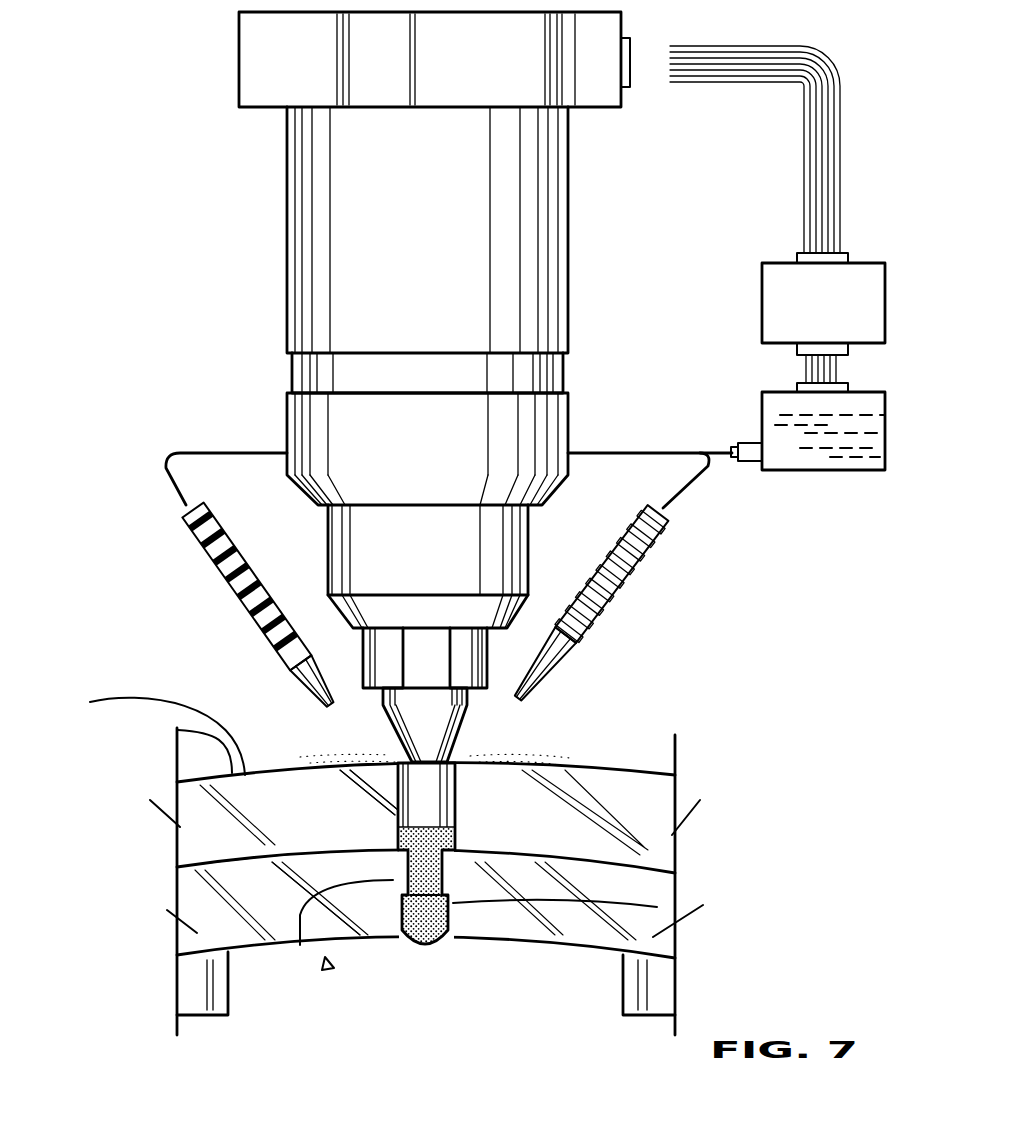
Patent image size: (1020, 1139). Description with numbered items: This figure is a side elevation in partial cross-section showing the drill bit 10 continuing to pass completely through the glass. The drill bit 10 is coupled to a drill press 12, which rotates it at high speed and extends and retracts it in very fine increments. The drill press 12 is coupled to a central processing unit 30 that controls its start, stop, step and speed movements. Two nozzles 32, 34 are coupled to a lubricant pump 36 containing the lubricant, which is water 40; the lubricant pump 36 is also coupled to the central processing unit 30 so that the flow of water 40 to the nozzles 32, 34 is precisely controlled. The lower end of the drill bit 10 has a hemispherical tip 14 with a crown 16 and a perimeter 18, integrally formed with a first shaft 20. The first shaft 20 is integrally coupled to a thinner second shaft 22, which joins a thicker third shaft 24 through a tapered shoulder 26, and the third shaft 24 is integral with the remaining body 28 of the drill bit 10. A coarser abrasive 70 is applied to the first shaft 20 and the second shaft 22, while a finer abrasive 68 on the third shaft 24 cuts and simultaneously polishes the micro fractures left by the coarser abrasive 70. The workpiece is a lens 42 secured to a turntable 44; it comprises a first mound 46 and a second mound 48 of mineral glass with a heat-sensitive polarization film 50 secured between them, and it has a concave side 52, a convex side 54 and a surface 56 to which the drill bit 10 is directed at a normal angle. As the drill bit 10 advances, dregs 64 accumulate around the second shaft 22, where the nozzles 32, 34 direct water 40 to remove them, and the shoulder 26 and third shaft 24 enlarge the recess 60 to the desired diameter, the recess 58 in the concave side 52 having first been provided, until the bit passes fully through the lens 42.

The drill bit 10 is at (352, 712).
The drill press 12 is at (240, 34).
The hemispherical tip 14 is at (432, 950).
The crown 16 is at (412, 950).
The perimeter 18 is at (473, 943).
The first shaft 20 is at (690, 912).
The second shaft 22 is at (458, 862).
The third shaft 24 is at (398, 862).
The tapered shoulder 26 is at (398, 885).
The remaining body 28 is at (475, 720).
The central processing unit 30 is at (772, 286).
The nozzle 32 is at (573, 672).
The nozzle 34 is at (292, 680).
The lubricant pump 36 is at (772, 404).
The water 40 is at (803, 452).
The lens 42 is at (325, 958).
The turntable 44 is at (223, 980).
The first mound 46 is at (690, 825).
The second mound 48 is at (690, 886).
The polarization film 50 is at (690, 848).
The concave side 52 is at (558, 945).
The convex side 54 is at (178, 730).
The surface 56 is at (151, 735).
The recess 58 is at (300, 947).
The recess 60 is at (398, 815).
The dregs 64 is at (398, 772).
The finer abrasive 68 is at (457, 817).
The coarser abrasive 70 is at (437, 947).